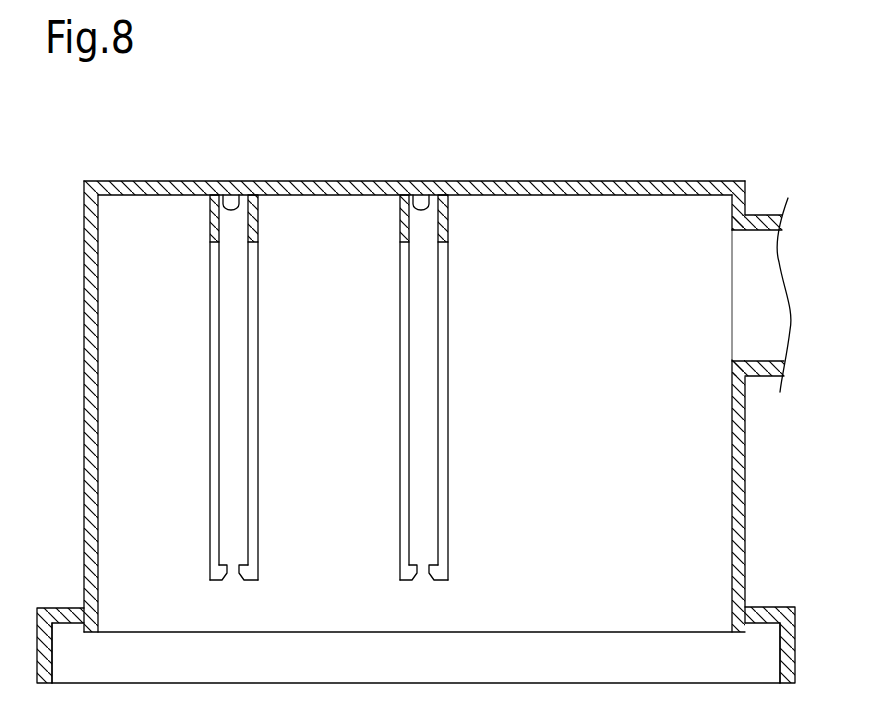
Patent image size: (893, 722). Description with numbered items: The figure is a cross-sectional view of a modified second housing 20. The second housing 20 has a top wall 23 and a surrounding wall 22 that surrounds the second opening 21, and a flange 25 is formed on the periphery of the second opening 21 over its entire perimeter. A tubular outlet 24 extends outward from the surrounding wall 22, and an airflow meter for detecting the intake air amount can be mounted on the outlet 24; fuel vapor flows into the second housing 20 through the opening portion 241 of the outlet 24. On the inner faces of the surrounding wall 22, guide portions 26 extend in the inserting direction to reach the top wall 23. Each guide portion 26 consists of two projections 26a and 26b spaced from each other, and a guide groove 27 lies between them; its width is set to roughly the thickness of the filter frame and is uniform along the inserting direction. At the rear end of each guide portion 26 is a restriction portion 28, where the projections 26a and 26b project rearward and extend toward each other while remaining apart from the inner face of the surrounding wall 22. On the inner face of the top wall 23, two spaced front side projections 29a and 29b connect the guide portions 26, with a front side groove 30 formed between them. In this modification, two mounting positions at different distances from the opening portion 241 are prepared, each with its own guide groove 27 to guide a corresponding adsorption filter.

The second housing 20 is at (128, 167).
The second opening 21 is at (104, 628).
The surrounding wall 22 is at (745, 491).
The top wall 23 is at (346, 181).
The tubular outlet 24 is at (730, 280).
The opening portion 241 is at (733, 351).
The flange 25 is at (62, 607).
The guide portion 26 is at (328, 384).
The projection 26a is at (258, 332).
The projection 26b is at (210, 333).
The guide groove 27 is at (224, 446).
The restriction portion 28 is at (243, 583).
The front side projection 29a is at (258, 235).
The front side projection 29b is at (212, 227).
The front side groove 30 is at (228, 198).